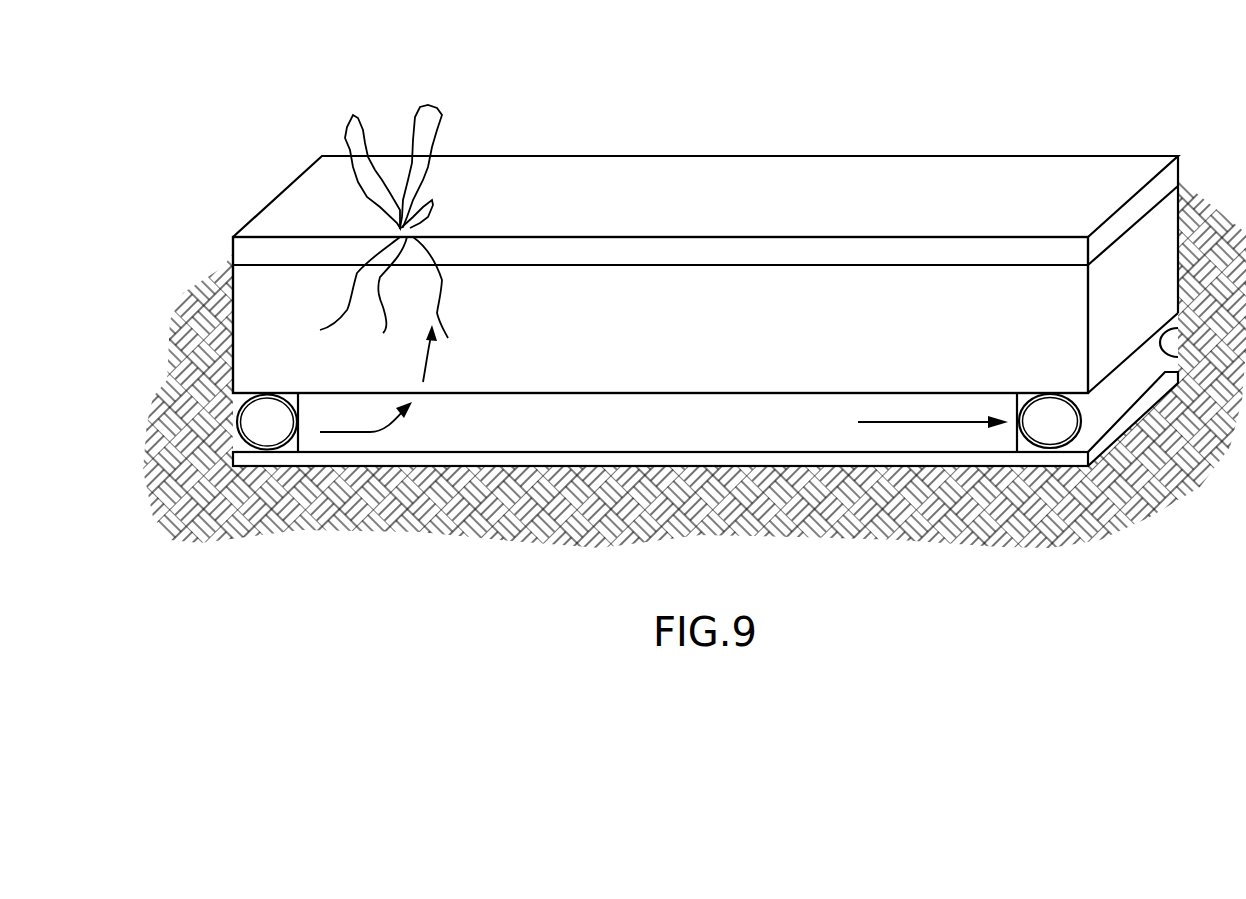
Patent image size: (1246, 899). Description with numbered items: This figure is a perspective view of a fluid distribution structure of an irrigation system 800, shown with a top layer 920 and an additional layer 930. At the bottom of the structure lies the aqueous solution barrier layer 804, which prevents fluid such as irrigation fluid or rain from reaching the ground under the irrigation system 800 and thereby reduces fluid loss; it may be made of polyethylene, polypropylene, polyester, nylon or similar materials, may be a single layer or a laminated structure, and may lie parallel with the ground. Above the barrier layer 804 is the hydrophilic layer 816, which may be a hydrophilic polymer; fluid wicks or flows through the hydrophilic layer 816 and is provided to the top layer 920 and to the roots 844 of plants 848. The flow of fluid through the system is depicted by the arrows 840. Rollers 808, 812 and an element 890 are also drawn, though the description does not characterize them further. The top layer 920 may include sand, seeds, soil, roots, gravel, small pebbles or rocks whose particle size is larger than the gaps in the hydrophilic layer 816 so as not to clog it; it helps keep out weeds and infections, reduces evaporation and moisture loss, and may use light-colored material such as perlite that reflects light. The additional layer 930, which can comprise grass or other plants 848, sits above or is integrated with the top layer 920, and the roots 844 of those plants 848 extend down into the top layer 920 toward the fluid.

The irrigation system 800 is at (983, 92).
The aqueous solution barrier layer 804 is at (595, 457).
The first roller 808 is at (255, 422).
The second roller 812 is at (1063, 425).
The hydrophilic layer 816 is at (722, 433).
The arrows 840 is at (892, 423).
The roots 844 is at (442, 290).
The plants 848 is at (440, 127).
The feed direction 890 is at (332, 430).
The top layer 920 is at (1158, 270).
The additional layer 930 is at (1167, 182).